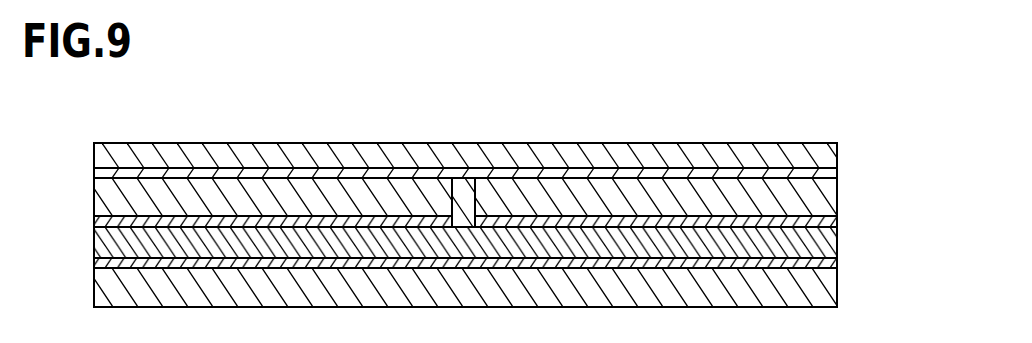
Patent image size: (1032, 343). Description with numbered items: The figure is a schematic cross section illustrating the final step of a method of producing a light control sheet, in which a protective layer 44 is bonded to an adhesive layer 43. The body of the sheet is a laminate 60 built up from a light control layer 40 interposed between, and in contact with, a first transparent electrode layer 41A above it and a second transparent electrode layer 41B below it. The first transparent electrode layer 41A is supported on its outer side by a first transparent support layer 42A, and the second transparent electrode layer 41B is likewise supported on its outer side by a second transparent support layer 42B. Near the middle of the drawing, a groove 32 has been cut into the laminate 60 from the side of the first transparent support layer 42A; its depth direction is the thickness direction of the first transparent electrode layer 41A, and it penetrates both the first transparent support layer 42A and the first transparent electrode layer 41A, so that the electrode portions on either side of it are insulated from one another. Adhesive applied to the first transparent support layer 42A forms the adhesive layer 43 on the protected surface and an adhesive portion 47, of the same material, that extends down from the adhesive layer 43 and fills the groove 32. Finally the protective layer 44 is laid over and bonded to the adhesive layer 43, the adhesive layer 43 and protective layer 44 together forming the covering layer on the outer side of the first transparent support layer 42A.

The laminate 60 is at (223, 176).
The adhesive portion 47 is at (460, 185).
The groove 32 is at (468, 185).
The protective layer 44 is at (838, 145).
The adhesive layer 43 is at (838, 173).
The first transparent support layer 42A is at (833, 192).
The first transparent electrode layer 41A is at (838, 220).
The light control layer 40 is at (830, 239).
The second transparent electrode layer 41B is at (838, 265).
The second transparent support layer 42B is at (838, 290).